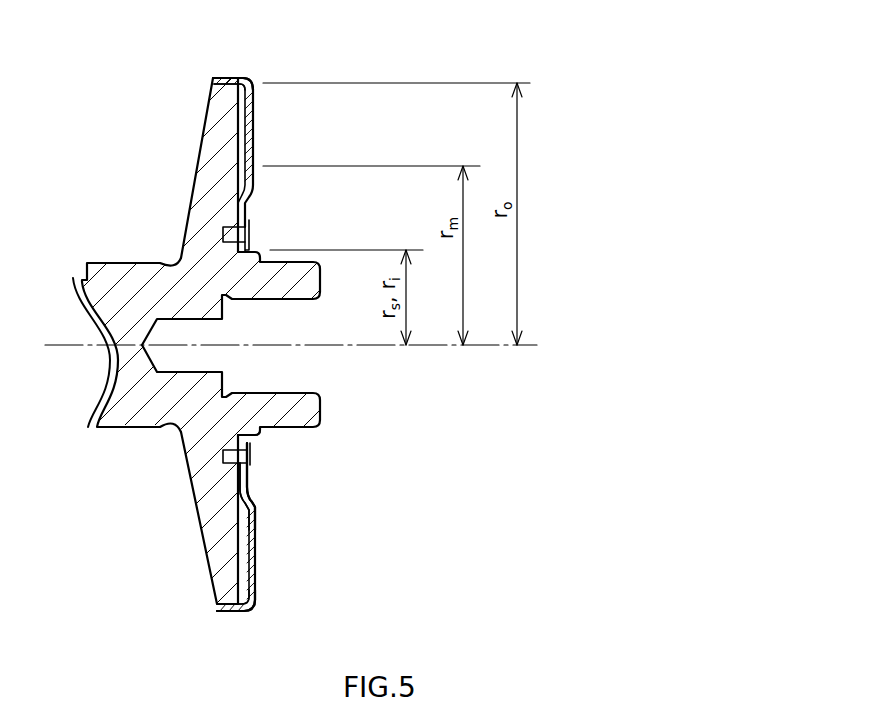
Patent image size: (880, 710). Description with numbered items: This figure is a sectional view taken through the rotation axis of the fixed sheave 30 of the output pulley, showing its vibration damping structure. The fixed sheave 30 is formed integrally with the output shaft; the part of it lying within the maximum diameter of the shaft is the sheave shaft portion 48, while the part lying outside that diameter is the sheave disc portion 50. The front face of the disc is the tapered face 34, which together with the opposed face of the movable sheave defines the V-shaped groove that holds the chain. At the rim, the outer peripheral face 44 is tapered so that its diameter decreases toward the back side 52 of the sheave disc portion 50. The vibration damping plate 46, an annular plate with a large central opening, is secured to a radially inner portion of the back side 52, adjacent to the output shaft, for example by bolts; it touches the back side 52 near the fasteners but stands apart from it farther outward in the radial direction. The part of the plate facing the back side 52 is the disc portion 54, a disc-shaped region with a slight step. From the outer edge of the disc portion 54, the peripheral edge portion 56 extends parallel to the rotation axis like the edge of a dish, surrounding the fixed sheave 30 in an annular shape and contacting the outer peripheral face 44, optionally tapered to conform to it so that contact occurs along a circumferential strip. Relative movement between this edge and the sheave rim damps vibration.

The fixed sheave 30 is at (203, 122).
The tapered face 34 is at (193, 507).
The outer peripheral face 44 is at (228, 80).
The vibration damping plate 46 is at (253, 134).
The sheave shaft portion 48 is at (204, 275).
The sheave disc portion 50 is at (215, 157).
The back side 52 is at (241, 546).
The disc portion 54 is at (257, 503).
The peripheral edge portion 56 is at (222, 612).